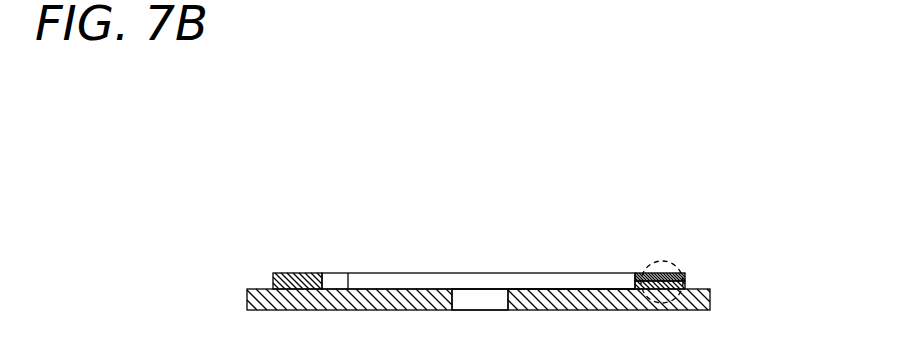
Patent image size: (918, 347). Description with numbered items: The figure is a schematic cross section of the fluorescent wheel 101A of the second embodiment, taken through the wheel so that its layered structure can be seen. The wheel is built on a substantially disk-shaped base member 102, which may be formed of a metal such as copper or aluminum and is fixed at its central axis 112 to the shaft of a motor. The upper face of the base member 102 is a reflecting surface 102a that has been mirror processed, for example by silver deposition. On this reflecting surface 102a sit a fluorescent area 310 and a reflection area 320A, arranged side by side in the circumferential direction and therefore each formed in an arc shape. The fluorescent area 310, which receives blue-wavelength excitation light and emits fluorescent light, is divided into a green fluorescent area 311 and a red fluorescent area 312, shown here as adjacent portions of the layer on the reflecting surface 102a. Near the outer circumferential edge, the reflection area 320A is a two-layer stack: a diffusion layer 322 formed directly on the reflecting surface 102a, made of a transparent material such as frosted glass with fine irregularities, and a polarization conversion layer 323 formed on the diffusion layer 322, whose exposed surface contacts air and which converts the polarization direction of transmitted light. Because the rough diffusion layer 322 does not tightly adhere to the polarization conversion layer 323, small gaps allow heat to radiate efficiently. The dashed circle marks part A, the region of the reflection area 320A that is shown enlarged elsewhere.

The fluorescent wheel 101A is at (583, 186).
The base member 102 is at (710, 297).
The reflecting surface 102a is at (568, 288).
The central axis 112 is at (482, 288).
The fluorescent area 310 is at (439, 235).
The green fluorescent area 311 is at (410, 272).
The red fluorescent area 312 is at (297, 272).
The reflection area 320A is at (655, 273).
The diffusion layer 322 is at (686, 284).
The polarization conversion layer 323 is at (686, 276).
The part A is at (676, 262).